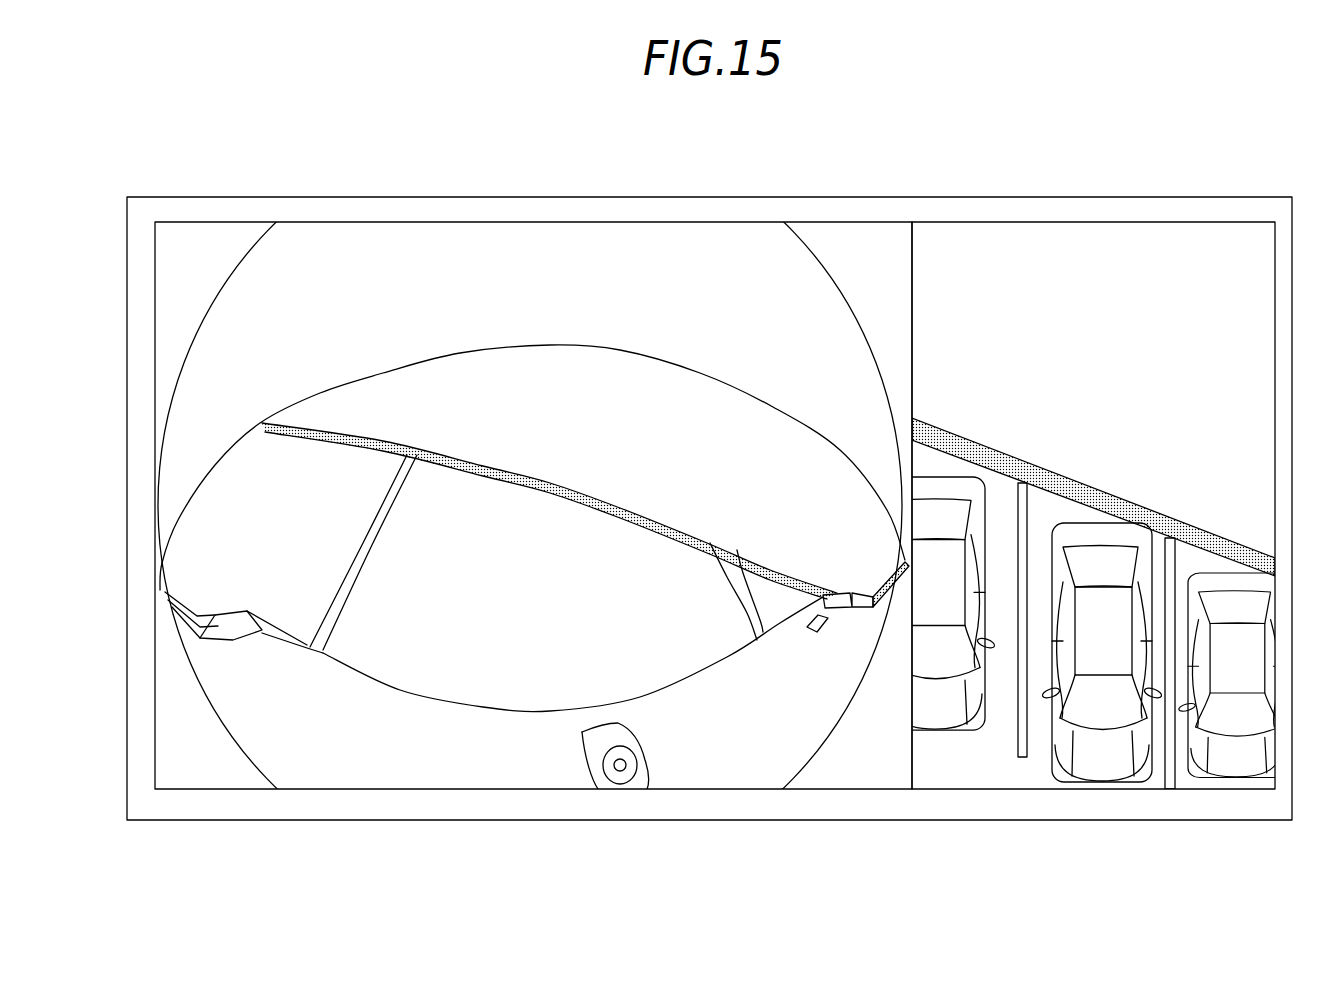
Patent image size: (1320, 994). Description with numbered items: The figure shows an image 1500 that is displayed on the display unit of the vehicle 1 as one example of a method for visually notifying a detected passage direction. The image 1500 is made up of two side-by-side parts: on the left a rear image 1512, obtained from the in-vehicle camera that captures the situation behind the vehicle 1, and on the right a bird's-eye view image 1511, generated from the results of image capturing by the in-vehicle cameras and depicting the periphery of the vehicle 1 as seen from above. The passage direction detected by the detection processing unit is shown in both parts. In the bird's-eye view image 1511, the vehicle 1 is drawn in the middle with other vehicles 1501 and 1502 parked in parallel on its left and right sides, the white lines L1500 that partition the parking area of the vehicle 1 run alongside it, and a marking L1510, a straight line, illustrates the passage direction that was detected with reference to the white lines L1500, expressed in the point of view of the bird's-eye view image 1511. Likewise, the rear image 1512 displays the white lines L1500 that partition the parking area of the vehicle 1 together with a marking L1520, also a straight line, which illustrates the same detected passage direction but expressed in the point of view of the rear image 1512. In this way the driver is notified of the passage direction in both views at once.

The image 1500 is at (178, 178).
The rear image 1512 is at (407, 221).
The bird's-eye view image 1511 is at (1140, 221).
The marking L1510 is at (1230, 545).
The white lines L1500 is at (340, 577).
The marking L1520 is at (487, 473).
The vehicle 1 is at (575, 788).
The other vehicle 1501 is at (940, 732).
The other vehicle 1502 is at (1223, 783).